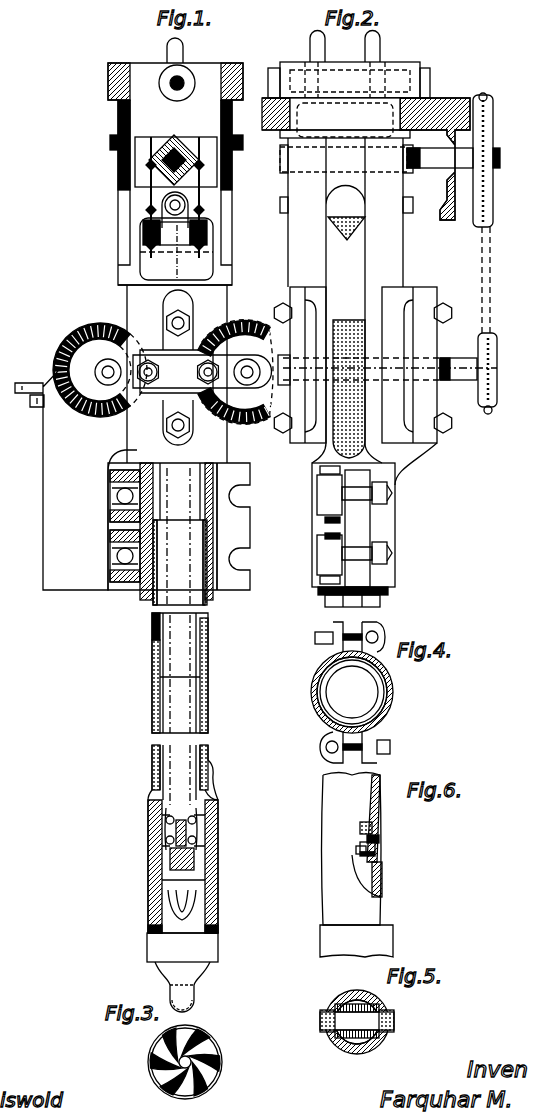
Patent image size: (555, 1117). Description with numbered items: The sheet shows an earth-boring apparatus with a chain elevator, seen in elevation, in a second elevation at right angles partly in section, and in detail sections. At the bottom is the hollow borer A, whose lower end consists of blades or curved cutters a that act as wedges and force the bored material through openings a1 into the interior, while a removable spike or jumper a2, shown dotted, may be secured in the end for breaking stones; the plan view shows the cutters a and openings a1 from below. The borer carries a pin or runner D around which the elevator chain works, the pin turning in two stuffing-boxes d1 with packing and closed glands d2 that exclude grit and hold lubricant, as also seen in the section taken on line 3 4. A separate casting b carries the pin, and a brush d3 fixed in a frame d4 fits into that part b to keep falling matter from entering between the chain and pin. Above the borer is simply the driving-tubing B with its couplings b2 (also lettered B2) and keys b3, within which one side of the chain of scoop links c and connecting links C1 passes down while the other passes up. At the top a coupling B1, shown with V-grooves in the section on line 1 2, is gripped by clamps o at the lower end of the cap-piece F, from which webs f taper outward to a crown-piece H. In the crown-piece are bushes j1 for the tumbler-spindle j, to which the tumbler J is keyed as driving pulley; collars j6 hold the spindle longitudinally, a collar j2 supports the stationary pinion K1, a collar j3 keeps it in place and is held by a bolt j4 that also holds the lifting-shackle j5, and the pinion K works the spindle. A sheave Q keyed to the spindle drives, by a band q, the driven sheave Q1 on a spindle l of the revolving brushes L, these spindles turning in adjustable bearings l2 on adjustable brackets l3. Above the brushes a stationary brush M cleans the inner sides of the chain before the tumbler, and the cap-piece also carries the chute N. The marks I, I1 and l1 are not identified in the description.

In FIG. 1, the tumbler-spindle j is at (118, 175).
In FIG. 2, the tumbler-spindle j is at (453, 158).
In FIG. 2, the spindle bushes j1 is at (288, 175).
In FIG. 1, the collar j2 is at (110, 140).
In FIG. 2, the collar j2 is at (349, 137).
In FIG. 1, the collar j3 is at (108, 82).
In FIG. 2, the collar j3 is at (401, 70).
In FIG. 1, the bolt j4 is at (184, 83).
In FIG. 2, the bolt j4 is at (283, 75).
In FIG. 1, the lifting-shackle j5 is at (176, 54).
In FIG. 2, the lifting-shackle j5 is at (421, 79).
In FIG. 2, the collars j6 is at (372, 45).
In FIG. 1, the tumbler J is at (135, 157).
In FIG. 1, the cam I is at (139, 109).
In FIG. 1, the cam roller I1 is at (160, 137).
In FIG. 1, the connecting links C1 is at (200, 230).
In FIG. 1, the stationary brush M is at (150, 238).
In FIG. 2, the stationary brush M is at (348, 241).
In FIG. 1, the crown-piece H is at (189, 145).
In FIG. 2, the crown-piece H is at (345, 300).
In FIG. 1, the cap-piece F is at (178, 368).
In FIG. 2, the cap-piece F is at (406, 486).
In FIG. 2, the pinion K is at (493, 120).
In FIG. 2, the stationary pinion K1 is at (446, 97).
In FIG. 2, the sheave Q is at (488, 205).
In FIG. 1, the driven sheave Q1 is at (120, 362).
In FIG. 2, the driven sheave Q1 is at (496, 356).
In FIG. 2, the band q is at (490, 290).
In FIG. 1, the revolving brushes L is at (84, 337).
In FIG. 2, the revolving brushes L is at (349, 389).
In FIG. 1, the brush spindles l is at (104, 375).
In FIG. 2, the brush spindles l is at (498, 372).
In FIG. 2, the bearing plate l1 is at (291, 360).
In FIG. 1, the adjustable bearings l2 is at (105, 382).
In FIG. 2, the adjustable bearings l2 is at (462, 381).
In FIG. 1, the adjustable brackets l3 is at (205, 362).
In FIG. 2, the adjustable brackets l3 is at (437, 341).
In FIG. 1, the webs f is at (160, 424).
In FIG. 2, the webs f is at (330, 400).
In FIG. 1, the chute N is at (76, 480).
In FIG. 1, the clamps o is at (112, 517).
In FIG. 2, the clamps o is at (392, 540).
In FIG. 4, the clamps o is at (393, 673).
In FIG. 1, the driving-tubing B is at (209, 696).
In FIG. 2, the driving-tubing B is at (380, 604).
In FIG. 1, the coupling B1 is at (213, 517).
In FIG. 4, the coupling B1 is at (398, 691).
In FIG. 1, the tube section B2 is at (209, 656).
In FIG. 1, the casting b is at (152, 815).
In FIG. 6, the casting b is at (388, 946).
In FIG. 1, the couplings b2 is at (152, 695).
In FIG. 1, the keys b3 is at (152, 625).
In FIG. 1, the scoop links c is at (212, 805).
In FIG. 6, the glands d2 is at (386, 848).
In FIG. 5, the glands d2 is at (325, 1028).
In FIG. 1, the brush d3 is at (190, 832).
In FIG. 6, the brush d3 is at (380, 831).
In FIG. 1, the brush frame d4 is at (184, 818).
In FIG. 6, the brush frame d4 is at (362, 822).
In FIG. 1, the pin or runner D is at (165, 836).
In FIG. 6, the pin or runner D is at (356, 850).
In FIG. 1, the section line 3 is at (160, 858).
In FIG. 1, the section line 4 is at (205, 858).
In FIG. 1, the blades or curved cutters a is at (160, 968).
In FIG. 3, the blades or curved cutters a is at (150, 1056).
In FIG. 1, the openings a1 is at (150, 920).
In FIG. 3, the openings a1 is at (203, 1040).
In FIG. 1, the spike or jumper a2 is at (192, 1005).
In FIG. 1, the borer A is at (204, 968).
In FIG. 3, the borer A is at (215, 1055).
In FIG. 6, the borer A is at (356, 941).
In FIG. 2, the section line 1 is at (410, 525).
In FIG. 2, the section line 2 is at (415, 524).
In FIG. 5, the stuffing-boxes d1 is at (325, 1018).